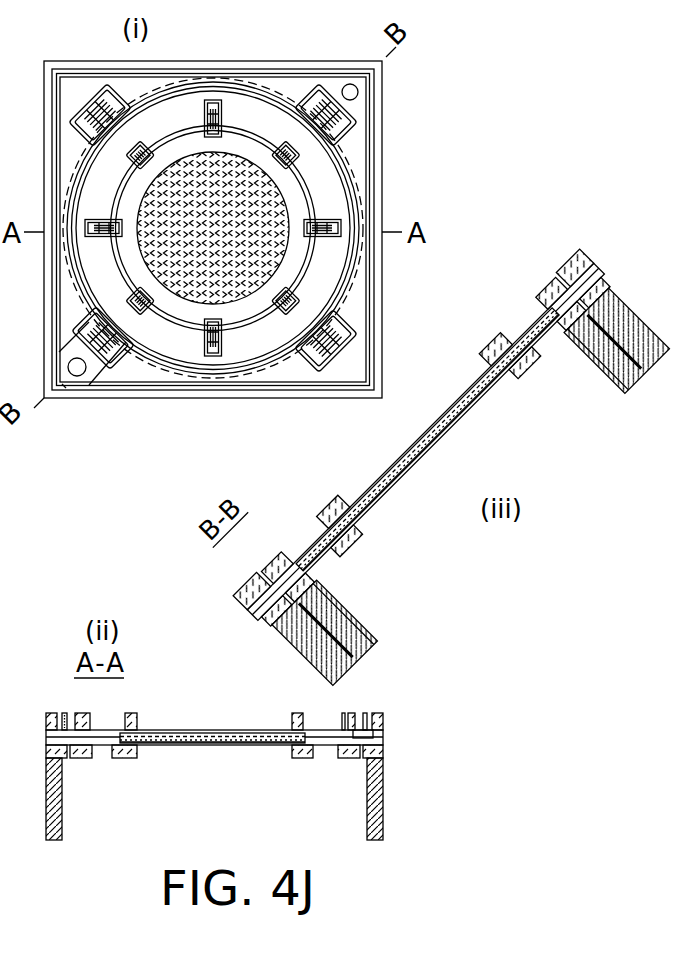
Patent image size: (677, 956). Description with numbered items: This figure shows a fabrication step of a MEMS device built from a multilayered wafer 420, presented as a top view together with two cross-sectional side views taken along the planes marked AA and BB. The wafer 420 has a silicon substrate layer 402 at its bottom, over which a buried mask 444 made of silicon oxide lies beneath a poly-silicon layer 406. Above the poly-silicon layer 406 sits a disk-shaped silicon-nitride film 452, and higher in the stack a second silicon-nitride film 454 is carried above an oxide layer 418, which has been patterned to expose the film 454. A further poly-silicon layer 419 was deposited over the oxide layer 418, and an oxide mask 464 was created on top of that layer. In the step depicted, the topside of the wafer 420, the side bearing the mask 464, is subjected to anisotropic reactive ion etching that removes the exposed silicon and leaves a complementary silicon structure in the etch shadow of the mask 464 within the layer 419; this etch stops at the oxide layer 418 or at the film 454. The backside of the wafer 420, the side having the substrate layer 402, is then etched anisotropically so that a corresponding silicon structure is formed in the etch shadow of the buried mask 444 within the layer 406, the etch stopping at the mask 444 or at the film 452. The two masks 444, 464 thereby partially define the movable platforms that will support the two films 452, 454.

The silicon substrate layer 402 is at (385, 810).
The poly-silicon layer 406 is at (385, 752).
The oxide layer 418 is at (584, 266).
The poly-silicon layer 419 is at (385, 722).
The wafer 420 is at (310, 769).
The mask 444 is at (350, 548).
The disk-shaped film 452 is at (438, 440).
The film 454 is at (232, 237).
The mask 464 is at (552, 289).